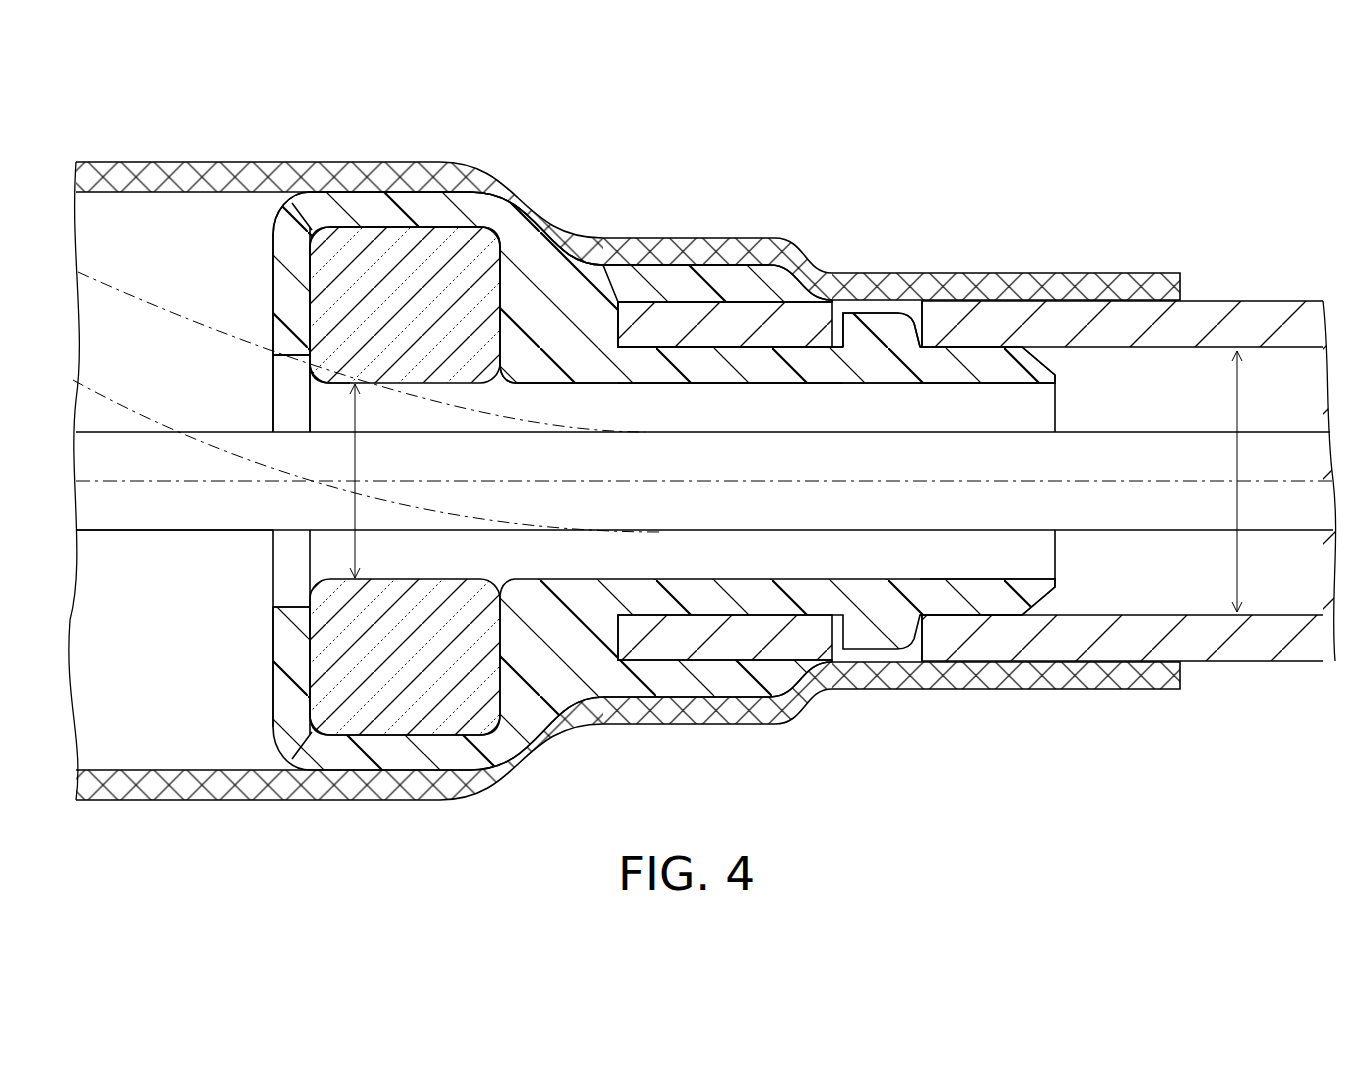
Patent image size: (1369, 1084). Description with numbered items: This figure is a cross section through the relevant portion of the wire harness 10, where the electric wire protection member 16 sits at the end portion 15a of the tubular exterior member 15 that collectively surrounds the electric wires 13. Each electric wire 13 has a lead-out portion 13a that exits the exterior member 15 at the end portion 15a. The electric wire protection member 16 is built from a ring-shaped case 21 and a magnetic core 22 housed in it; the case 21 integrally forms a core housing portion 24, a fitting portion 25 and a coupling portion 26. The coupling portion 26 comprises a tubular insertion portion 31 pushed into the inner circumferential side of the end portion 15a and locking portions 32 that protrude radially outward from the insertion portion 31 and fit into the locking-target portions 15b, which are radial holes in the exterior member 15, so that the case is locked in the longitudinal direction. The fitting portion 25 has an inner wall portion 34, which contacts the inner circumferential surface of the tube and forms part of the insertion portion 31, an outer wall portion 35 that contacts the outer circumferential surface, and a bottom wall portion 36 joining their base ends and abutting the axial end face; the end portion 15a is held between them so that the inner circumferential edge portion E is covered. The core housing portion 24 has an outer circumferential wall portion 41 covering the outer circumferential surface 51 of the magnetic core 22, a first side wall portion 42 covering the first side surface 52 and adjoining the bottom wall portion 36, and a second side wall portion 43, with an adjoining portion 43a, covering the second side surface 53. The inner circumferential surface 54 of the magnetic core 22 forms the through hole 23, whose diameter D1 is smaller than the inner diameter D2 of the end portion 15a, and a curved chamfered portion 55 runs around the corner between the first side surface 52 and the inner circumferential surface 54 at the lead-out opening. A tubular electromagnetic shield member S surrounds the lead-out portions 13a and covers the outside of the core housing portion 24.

The wire harness 10 is at (702, 451).
The electric wire 13 is at (175, 320).
The lead-out portion 13a is at (155, 532).
The exterior member 15 is at (1257, 300).
The end portion 15a is at (745, 320).
The locking-target portion 15b is at (905, 305).
The electric wire protection member 16 is at (262, 675).
The case 21 is at (273, 630).
The magnetic core 22 is at (405, 245).
The through hole 23 is at (405, 481).
The inner circumferential surface 54 is at (400, 385).
The core housing portion 24 is at (298, 200).
The fitting portion 25 is at (642, 383).
The coupling portion 26 is at (957, 617).
The insertion portion 31 is at (980, 360).
The locking portion 32 is at (880, 320).
The inner wall portion 34 is at (663, 373).
The outer wall portion 35 is at (681, 277).
The bottom wall portion 36 is at (605, 325).
The outer circumferential wall portion 41 is at (372, 205).
The first side wall portion 42 is at (522, 345).
The second side wall portion 43 is at (290, 300).
The ring lip 43a is at (290, 368).
The outer circumferential surface 51 is at (442, 225).
The first side surface 52 is at (506, 280).
The second side surface 53 is at (300, 255).
The chamfered portion 55 is at (318, 385).
The electromagnetic shield member S is at (220, 160).
The inner circumferential edge portion E is at (607, 357).
The diameter of the through hole D1 is at (358, 555).
The inner diameter of the end portion D2 is at (1240, 565).